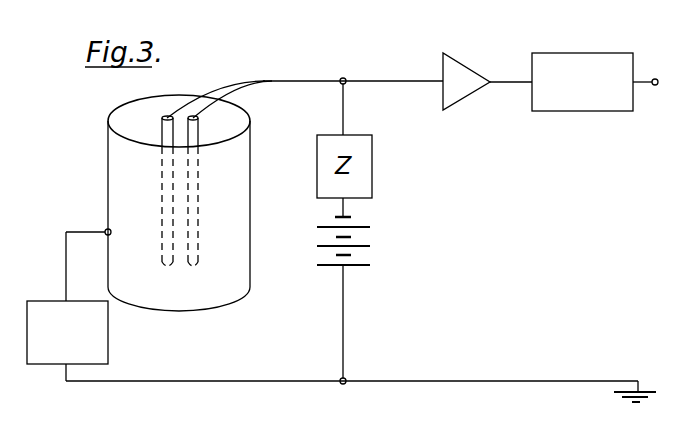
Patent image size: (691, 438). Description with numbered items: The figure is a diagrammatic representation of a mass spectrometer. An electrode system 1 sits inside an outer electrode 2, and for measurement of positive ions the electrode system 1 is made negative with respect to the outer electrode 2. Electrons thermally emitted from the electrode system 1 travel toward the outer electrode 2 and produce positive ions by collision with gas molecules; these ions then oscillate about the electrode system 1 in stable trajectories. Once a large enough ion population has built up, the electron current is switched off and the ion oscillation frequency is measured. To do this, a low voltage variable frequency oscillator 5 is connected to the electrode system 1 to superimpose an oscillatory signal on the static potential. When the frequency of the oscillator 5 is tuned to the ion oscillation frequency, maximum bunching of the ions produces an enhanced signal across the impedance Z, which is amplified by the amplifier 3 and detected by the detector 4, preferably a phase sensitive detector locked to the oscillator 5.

The electrode system 1 is at (167, 115).
The outer electrode 2 is at (251, 165).
The amplifier 3 is at (452, 88).
The detector 4 is at (550, 100).
The variable frequency oscillator 5 is at (109, 334).